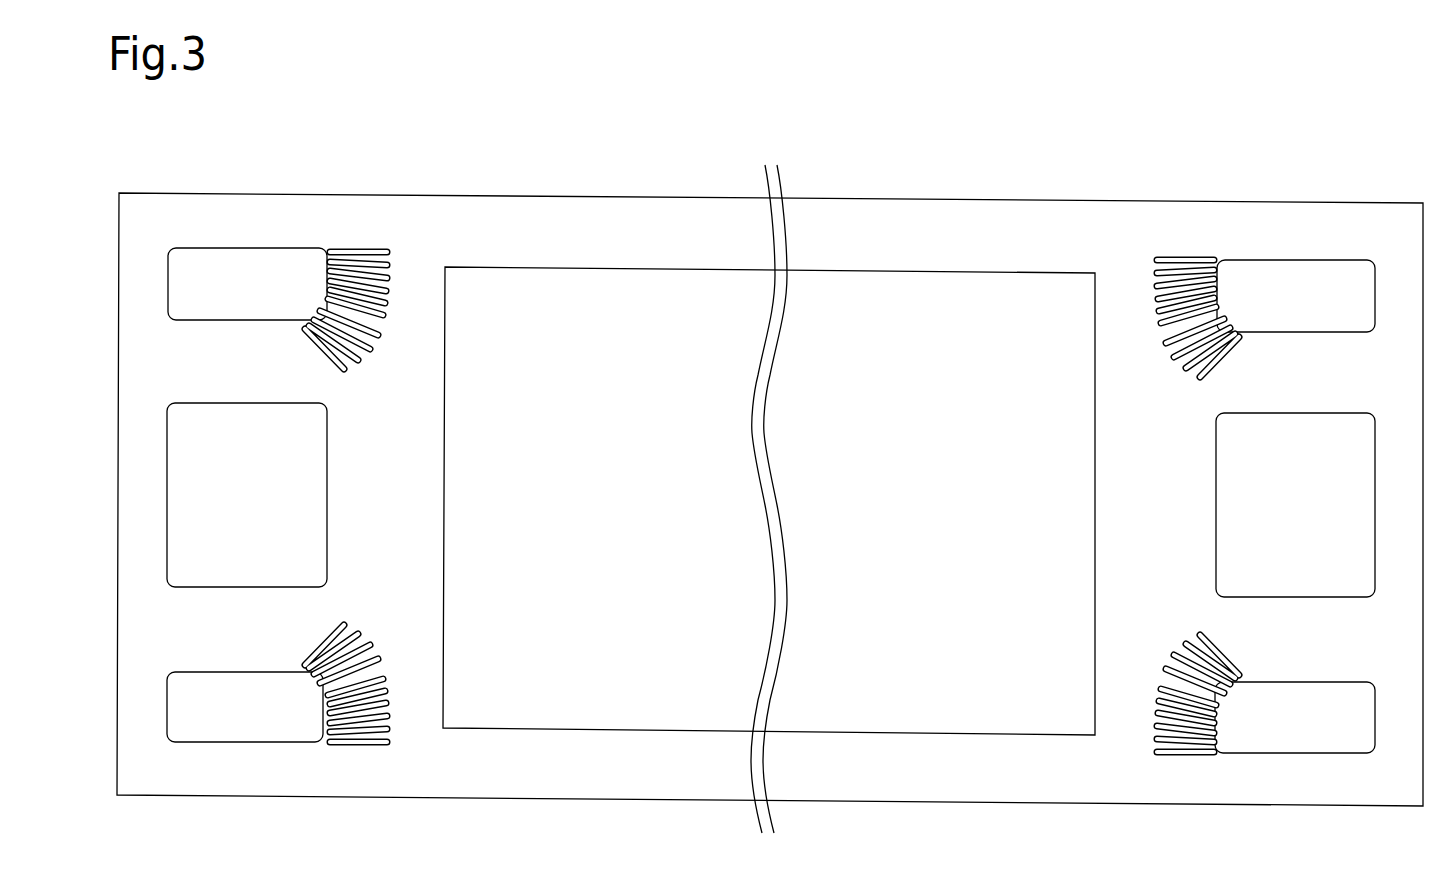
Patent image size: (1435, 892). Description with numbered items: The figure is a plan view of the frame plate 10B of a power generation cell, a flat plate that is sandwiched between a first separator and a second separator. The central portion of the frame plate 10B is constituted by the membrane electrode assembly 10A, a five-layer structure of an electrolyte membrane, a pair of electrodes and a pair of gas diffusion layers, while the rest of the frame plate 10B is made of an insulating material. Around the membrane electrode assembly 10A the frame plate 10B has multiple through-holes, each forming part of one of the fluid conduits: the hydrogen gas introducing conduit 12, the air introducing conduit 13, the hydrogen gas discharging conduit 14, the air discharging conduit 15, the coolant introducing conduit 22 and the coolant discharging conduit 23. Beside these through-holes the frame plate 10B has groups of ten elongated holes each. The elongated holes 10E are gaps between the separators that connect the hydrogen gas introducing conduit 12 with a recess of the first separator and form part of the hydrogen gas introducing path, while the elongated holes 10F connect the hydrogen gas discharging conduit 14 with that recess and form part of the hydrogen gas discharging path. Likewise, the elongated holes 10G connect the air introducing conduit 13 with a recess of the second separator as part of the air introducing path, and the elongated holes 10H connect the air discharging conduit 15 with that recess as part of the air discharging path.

The membrane electrode assembly 10A is at (897, 305).
The frame plate 10B is at (1067, 228).
The elongated holes 10E is at (372, 355).
The elongated holes 10F is at (1172, 650).
The elongated holes 10G is at (1172, 358).
The elongated holes 10H is at (372, 642).
The hydrogen gas introducing conduit 12 is at (232, 298).
The air introducing conduit 13 is at (1281, 310).
The hydrogen gas discharging conduit 14 is at (1280, 731).
The air discharging conduit 15 is at (230, 721).
The coolant introducing conduit 22 is at (232, 508).
The coolant discharging conduit 23 is at (1281, 516).